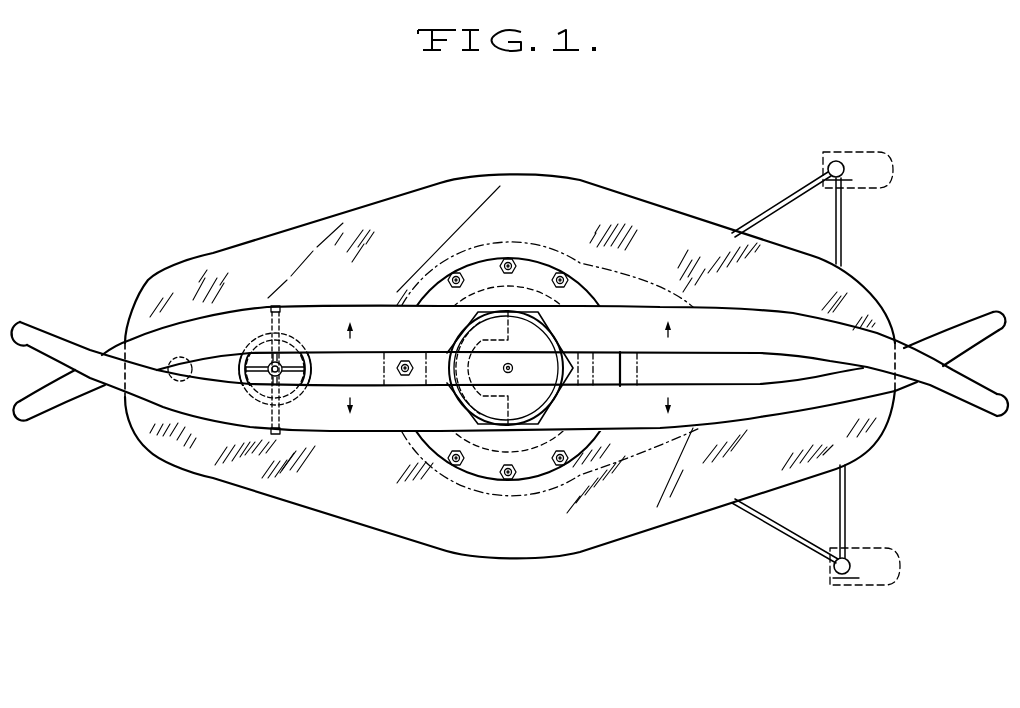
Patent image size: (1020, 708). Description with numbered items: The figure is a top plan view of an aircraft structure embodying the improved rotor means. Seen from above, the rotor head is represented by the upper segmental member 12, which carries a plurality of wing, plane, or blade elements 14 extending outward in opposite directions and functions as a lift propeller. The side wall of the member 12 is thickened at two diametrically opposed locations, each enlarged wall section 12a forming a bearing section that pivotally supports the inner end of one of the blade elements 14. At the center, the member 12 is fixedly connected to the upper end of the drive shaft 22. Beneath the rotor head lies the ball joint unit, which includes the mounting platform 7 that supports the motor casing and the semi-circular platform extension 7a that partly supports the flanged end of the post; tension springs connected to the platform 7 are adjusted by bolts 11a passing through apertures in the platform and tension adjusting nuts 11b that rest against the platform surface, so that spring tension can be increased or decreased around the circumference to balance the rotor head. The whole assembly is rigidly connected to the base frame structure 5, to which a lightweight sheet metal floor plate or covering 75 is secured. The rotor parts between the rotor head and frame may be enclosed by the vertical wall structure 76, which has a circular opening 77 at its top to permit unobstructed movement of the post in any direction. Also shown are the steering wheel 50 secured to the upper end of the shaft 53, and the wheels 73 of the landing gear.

The base frame structure 5 is at (775, 530).
The mounting platform 7 is at (623, 212).
The semi-circular platform extension 7a is at (472, 346).
The bolts 11a is at (560, 273).
The tension adjusting nuts 11b is at (462, 274).
The segmental member 12 is at (480, 390).
The enlarged wall section 12a is at (568, 351).
The blade elements 14 is at (232, 327).
The drive shaft 22 is at (517, 351).
The steering wheel 50 is at (314, 372).
The shaft 53 is at (282, 363).
The wheels 73 is at (890, 183).
The floor plate covering 75 is at (283, 500).
The vertical wall structure 76 is at (660, 286).
The circular opening 77 is at (560, 432).